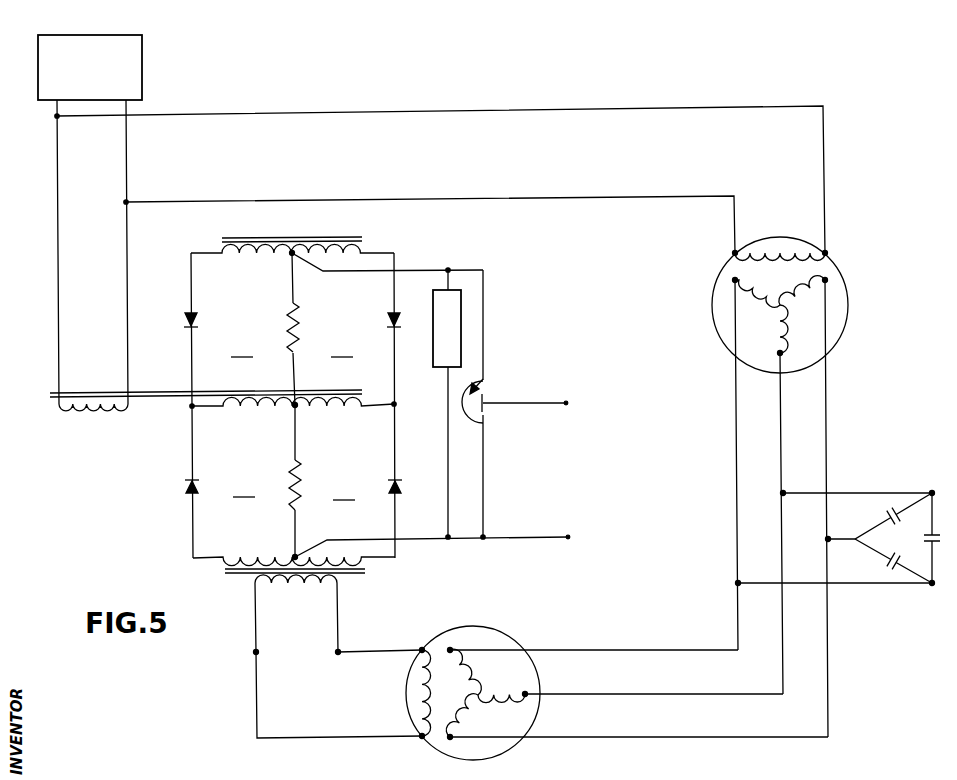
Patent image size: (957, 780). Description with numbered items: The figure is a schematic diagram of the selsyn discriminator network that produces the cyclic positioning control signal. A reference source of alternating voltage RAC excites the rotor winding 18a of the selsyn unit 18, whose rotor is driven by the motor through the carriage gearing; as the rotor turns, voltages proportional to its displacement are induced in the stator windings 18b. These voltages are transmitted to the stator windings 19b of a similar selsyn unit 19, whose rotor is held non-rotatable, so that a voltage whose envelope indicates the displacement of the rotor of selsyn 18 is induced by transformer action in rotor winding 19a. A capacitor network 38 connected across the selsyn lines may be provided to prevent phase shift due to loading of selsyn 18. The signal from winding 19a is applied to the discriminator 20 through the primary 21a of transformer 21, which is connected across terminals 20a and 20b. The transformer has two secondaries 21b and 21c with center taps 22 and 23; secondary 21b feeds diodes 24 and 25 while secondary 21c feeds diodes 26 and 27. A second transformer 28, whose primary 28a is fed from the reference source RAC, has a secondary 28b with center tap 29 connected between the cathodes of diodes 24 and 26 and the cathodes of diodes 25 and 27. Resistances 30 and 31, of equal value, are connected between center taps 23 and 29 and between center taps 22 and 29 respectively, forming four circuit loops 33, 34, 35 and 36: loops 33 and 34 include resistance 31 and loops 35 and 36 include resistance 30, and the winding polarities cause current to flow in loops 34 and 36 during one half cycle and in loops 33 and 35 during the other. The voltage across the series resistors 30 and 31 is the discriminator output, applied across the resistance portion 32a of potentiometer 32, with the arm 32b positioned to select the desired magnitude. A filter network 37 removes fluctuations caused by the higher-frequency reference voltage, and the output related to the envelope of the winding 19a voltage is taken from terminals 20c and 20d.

The reference source of alternating voltage RAC is at (143, 72).
The selsyn unit 18 is at (849, 305).
The rotor winding 18a is at (792, 252).
The stator windings 18b is at (790, 291).
The selsyn unit 19 is at (504, 630).
The rotor winding 19a is at (424, 710).
The stator windings 19b is at (466, 691).
The discriminator 20 is at (488, 337).
The terminal 20a is at (340, 650).
The terminal 20b is at (252, 654).
The terminal 20c is at (566, 403).
The terminal 20d is at (568, 537).
The transformer 21 is at (362, 238).
The primary winding 21a is at (300, 585).
The secondary winding 21b is at (234, 554).
The secondary winding 21c is at (220, 248).
The center tap 22 is at (290, 548).
The center tap 23 is at (290, 256).
The diode 24 is at (184, 488).
The diode 25 is at (398, 482).
The diode 26 is at (182, 322).
The diode 27 is at (386, 326).
The transformer 28 is at (49, 406).
The primary winding 28a is at (105, 415).
The secondary winding 28b is at (352, 407).
The center tap 29 is at (291, 411).
The resistance 30 is at (300, 322).
The resistance 31 is at (300, 472).
The potentiometer 32 is at (485, 410).
The resistance portion 32a is at (471, 423).
The potentiometer arm 32b is at (480, 392).
The circuit loop 33 is at (244, 488).
The circuit loop 34 is at (344, 491).
The circuit loop 35 is at (342, 348).
The circuit loop 36 is at (242, 348).
The filter network 37 is at (430, 314).
The capacitor network 38 is at (914, 547).